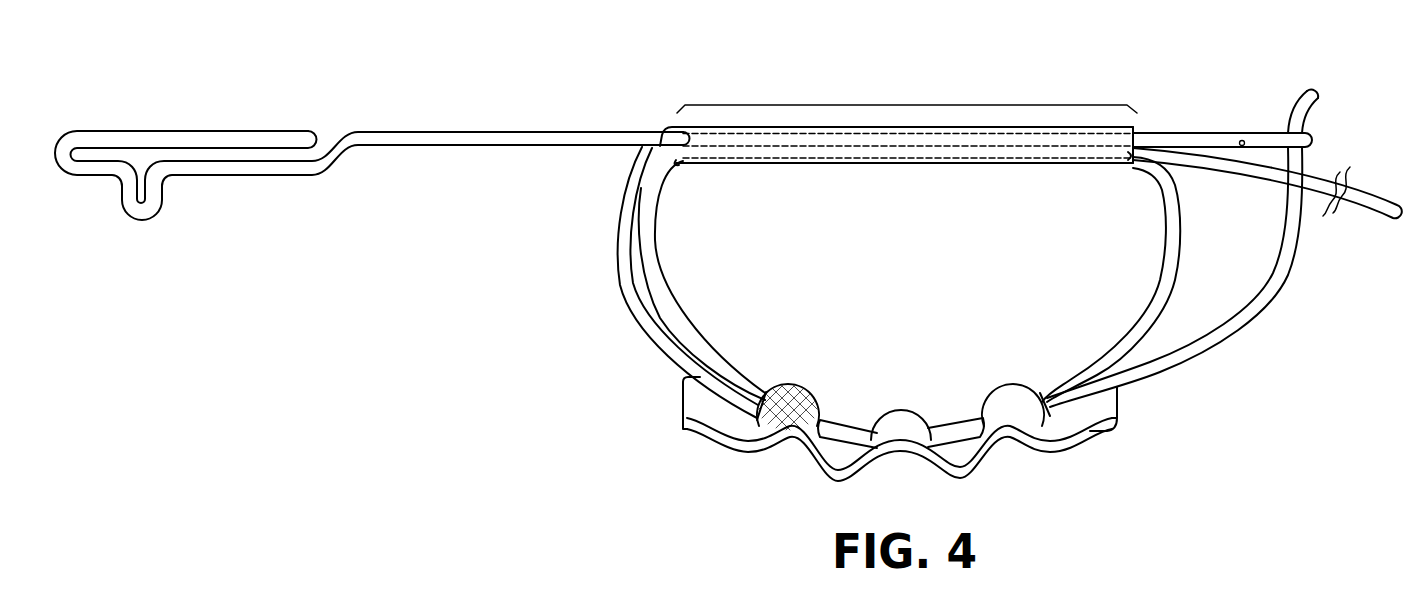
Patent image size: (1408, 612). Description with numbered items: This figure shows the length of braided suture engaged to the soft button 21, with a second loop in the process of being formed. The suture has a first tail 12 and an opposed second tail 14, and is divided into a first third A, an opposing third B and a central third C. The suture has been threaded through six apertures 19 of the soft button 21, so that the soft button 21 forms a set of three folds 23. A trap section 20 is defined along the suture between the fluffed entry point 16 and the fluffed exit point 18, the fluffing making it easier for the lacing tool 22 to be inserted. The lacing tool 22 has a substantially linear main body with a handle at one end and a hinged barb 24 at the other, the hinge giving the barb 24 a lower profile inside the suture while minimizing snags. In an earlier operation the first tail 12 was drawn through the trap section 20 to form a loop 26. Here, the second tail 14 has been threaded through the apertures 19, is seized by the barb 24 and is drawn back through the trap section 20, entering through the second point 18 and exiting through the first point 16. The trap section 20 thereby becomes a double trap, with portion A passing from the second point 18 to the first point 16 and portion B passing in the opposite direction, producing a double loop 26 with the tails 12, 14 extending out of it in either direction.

The first tail 12 is at (1380, 222).
The second tail 14 is at (1306, 85).
The entry point 16 is at (1118, 152).
The exit point 18 is at (688, 162).
The apertures 19 is at (810, 402).
The trap section 20 is at (905, 103).
The soft button 21 is at (1118, 407).
The lacing tool 22 is at (188, 129).
The folds 23 is at (778, 383).
The hinged barb 24 is at (1246, 130).
The loop 26 is at (626, 345).
The first third A is at (660, 278).
The opposing third B is at (1265, 314).
The central third C is at (616, 272).